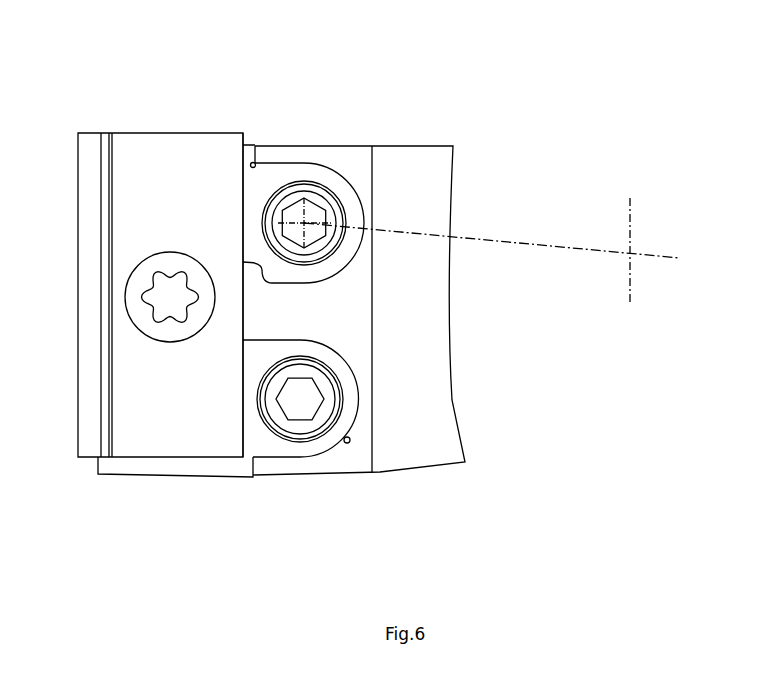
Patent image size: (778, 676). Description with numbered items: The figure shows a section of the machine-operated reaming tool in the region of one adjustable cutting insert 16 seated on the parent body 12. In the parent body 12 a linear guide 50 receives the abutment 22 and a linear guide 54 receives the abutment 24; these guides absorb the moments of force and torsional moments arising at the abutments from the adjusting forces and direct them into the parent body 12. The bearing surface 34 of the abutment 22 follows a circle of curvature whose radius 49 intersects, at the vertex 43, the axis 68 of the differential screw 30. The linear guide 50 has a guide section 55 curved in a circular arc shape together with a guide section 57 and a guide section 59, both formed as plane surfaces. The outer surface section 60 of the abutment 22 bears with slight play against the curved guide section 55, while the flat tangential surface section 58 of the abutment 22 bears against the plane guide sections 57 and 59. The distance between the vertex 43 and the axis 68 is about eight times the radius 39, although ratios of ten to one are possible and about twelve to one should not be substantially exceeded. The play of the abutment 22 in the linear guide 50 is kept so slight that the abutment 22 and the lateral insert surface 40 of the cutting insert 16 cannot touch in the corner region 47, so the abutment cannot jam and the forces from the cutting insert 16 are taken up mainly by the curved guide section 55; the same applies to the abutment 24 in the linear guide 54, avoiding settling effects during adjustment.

The parent body 12 is at (400, 432).
The cutting insert 16 is at (133, 383).
The abutment 22 is at (334, 188).
The abutment 24 is at (276, 448).
The differential screw 30 is at (312, 188).
The bearing surface 34 is at (266, 183).
The radius 39 is at (356, 205).
The lateral insert surface 40 is at (293, 288).
The vertex 43 is at (243, 218).
The corner region 47 is at (237, 295).
The radius 49 is at (420, 233).
The linear guide 50 is at (347, 272).
The linear guide 54 is at (347, 443).
The guide section 55 is at (360, 240).
The guide section 57 is at (245, 218).
The flat tangential surface section 58 is at (262, 220).
The guide section 59 is at (243, 315).
The outer surface section 60 is at (263, 245).
The axis 68 is at (350, 185).